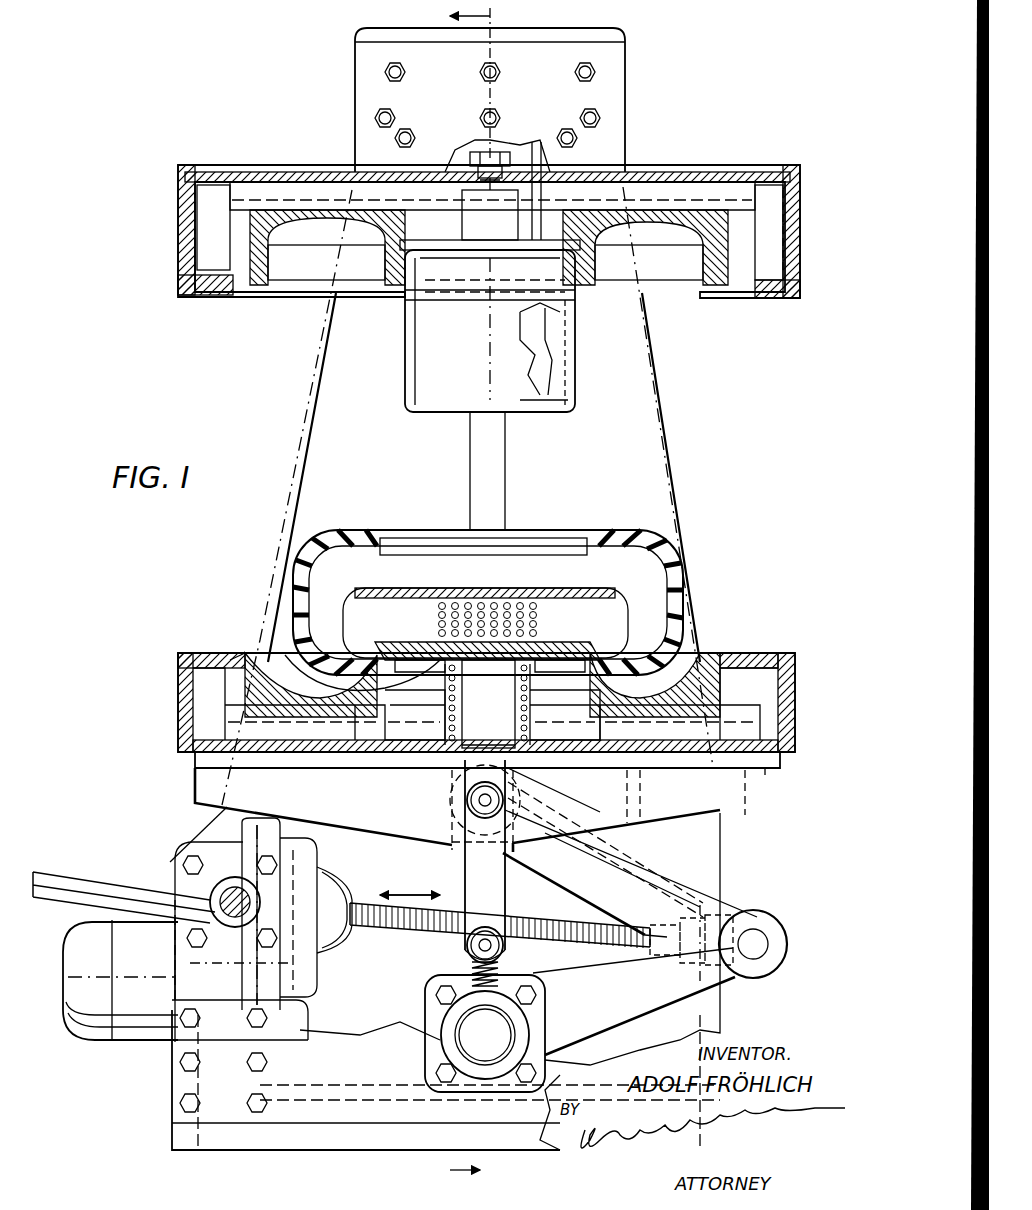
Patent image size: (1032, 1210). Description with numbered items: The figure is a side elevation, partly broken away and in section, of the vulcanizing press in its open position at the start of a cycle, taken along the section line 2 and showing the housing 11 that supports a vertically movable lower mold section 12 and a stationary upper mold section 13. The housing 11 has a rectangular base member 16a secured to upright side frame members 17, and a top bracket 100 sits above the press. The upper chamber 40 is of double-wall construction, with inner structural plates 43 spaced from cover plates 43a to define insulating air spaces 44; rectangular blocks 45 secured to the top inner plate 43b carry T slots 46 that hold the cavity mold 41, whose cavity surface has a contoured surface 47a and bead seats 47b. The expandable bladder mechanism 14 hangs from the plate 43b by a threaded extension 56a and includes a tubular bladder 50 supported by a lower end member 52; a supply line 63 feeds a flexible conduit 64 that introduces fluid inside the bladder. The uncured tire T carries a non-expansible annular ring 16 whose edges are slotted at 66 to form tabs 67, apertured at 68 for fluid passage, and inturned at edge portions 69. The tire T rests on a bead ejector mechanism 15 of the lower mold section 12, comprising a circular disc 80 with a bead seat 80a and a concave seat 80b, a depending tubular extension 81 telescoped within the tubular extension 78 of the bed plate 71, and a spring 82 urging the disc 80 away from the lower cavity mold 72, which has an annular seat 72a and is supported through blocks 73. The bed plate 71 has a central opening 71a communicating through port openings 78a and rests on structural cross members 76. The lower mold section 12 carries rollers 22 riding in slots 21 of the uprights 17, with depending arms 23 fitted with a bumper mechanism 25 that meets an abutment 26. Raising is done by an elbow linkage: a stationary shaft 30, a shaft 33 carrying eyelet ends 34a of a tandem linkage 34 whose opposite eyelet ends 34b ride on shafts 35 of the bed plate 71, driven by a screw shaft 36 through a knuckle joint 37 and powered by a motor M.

The section line 2- 2 is at (455, 596).
The top bracket 100 is at (608, 36).
The chamber 40 is at (842, 198).
The top inner plate 43b is at (298, 172).
The rectangular blocks 45 is at (233, 188).
The T slot 46 is at (756, 160).
The cover plates 43a is at (195, 208).
The air spaces 44 is at (215, 168).
The cavity mold 41 is at (260, 228).
The inner structural side and top plates 43 is at (220, 252).
The contoured surface 47a is at (275, 280).
The bead seats 47b is at (380, 275).
The upper mold section 13 is at (780, 250).
The threaded extension 56a is at (490, 193).
The supply line 63 is at (541, 218).
The expandable bladder mechanism 14 is at (410, 373).
The flexible conduit 64 is at (540, 349).
The tubular bladder 50 is at (575, 383).
The lower end member 52 is at (575, 405).
The vertically extending slots 21 is at (505, 458).
The housing 11 is at (695, 432).
The upright side frame members 17 is at (650, 468).
The uncured tire T is at (643, 537).
The annular ring 16 is at (390, 598).
The apertures 68 is at (458, 607).
The tabs 67 is at (503, 598).
The slots 66 is at (588, 597).
The edge portions 69 is at (410, 617).
The circular disc 80 is at (397, 644).
The seat 80b is at (545, 645).
The bead seat 80a is at (578, 648).
The bead ejector mechanism 15 is at (355, 680).
The depending tubular extension 81 is at (510, 674).
The spring 82 is at (495, 693).
The cavity mold 72 is at (280, 690).
The annular seat 72a is at (603, 678).
The lower mold section 12 is at (185, 690).
The blocks 73 is at (200, 737).
The port openings 78a is at (445, 725).
The tubular extension 78 is at (530, 727).
The central opening 71a is at (487, 731).
The bed plate 71 is at (200, 770).
The structural cross members 76 is at (357, 830).
The eyelet ends 34b is at (605, 849).
The integral arms 23 is at (465, 892).
The shafts 35 is at (473, 800).
The rollers 22 is at (465, 815).
The bumper mechanism 25 is at (470, 955).
The screw shaft 36 is at (390, 930).
The abutment 26 is at (430, 986).
The stationary shaft 30 is at (485, 1033).
The tandem linkage 34 is at (693, 885).
The shaft 33 is at (760, 945).
The eyelet ends 34a is at (760, 922).
The knuckle joint 37 is at (745, 890).
The motor M is at (115, 1045).
The rectangular base member 16a is at (180, 1150).